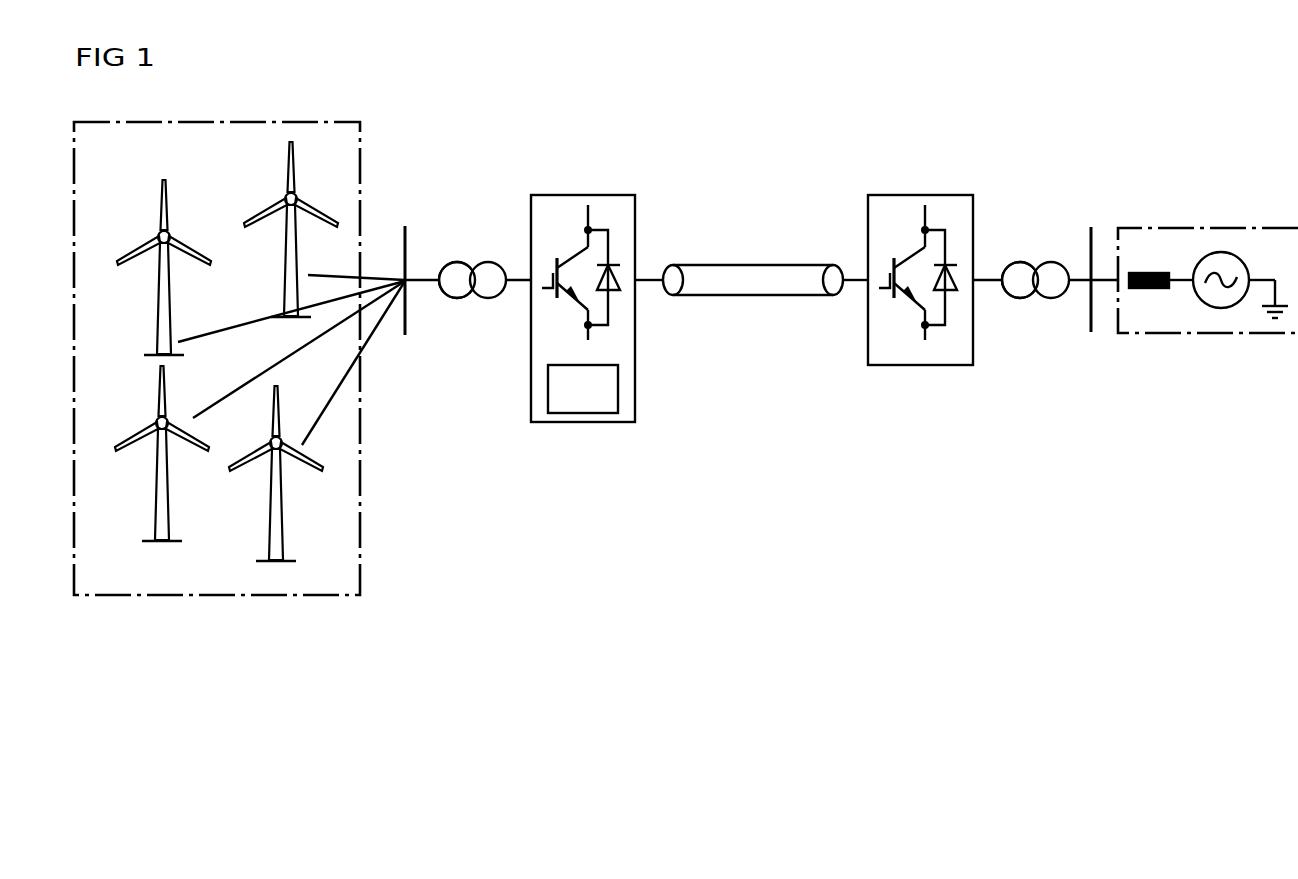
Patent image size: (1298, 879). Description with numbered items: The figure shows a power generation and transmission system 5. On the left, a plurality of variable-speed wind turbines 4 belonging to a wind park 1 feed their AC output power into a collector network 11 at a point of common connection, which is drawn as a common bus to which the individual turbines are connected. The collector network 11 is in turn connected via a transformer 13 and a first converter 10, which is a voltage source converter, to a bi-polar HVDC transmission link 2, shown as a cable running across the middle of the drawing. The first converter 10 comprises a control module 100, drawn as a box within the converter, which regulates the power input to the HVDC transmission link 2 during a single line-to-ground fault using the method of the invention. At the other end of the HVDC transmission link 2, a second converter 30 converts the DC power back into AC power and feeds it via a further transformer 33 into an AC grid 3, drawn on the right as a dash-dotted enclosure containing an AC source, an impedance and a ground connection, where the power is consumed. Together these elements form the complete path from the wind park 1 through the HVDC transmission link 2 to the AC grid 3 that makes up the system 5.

The wind park 1 is at (243, 122).
The variable-speed wind turbines 4 is at (284, 511).
The collector network 11 is at (375, 257).
The transformer 13 is at (489, 262).
The first converter 10 is at (585, 195).
The control module 100 is at (583, 413).
The bi-polar HVDC transmission link 2 is at (756, 265).
The grid side converter 30 is at (922, 195).
The transformer 33 is at (1021, 262).
The AC grid 3 is at (1228, 228).
The power generation and transmission system 5 is at (950, 464).